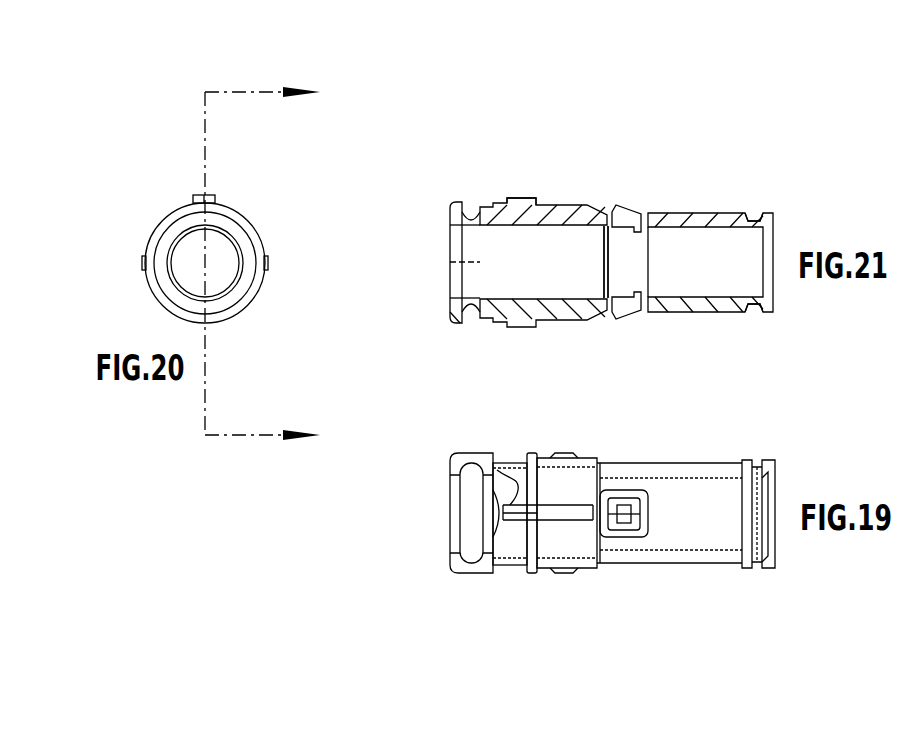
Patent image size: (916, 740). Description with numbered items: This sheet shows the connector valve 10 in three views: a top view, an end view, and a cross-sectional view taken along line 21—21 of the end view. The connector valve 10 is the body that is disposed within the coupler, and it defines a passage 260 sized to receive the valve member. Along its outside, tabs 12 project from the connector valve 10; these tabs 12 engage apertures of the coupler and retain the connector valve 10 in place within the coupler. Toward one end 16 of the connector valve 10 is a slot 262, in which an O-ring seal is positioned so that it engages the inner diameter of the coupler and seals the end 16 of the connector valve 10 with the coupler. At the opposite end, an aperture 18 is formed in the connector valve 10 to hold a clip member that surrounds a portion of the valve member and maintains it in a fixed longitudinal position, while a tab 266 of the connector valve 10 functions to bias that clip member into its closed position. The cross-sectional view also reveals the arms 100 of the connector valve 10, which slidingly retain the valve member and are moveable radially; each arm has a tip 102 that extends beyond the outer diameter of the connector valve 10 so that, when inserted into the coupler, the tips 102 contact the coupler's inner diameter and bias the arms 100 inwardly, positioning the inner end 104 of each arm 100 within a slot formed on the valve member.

In FIG. 20, the connector valve 10 is at (108, 184).
In FIG. 21, the connector valve 10 is at (735, 100).
In FIG. 19, the connector valve 10 is at (690, 634).
In FIG. 20, the tabs 12 is at (142, 262).
In FIG. 19, the tabs 12 is at (558, 453).
In FIG. 21, the end 16 is at (770, 315).
In FIG. 19, the end 16 is at (770, 568).
In FIG. 21, the aperture 18 is at (468, 218).
In FIG. 19, the aperture 18 is at (467, 574).
In FIG. 20, the section line 21— 21 is at (286, 263).
In FIG. 21, the arms 100 is at (628, 300).
In FIG. 21, the tips 102 is at (616, 207).
In FIG. 21, the inner end 104 is at (615, 300).
In FIG. 20, the passage 260 is at (220, 250).
In FIG. 21, the passage 260 is at (520, 277).
In FIG. 21, the slot 262 is at (754, 213).
In FIG. 19, the slot 262 is at (760, 458).
In FIG. 20, the tab 266 is at (214, 196).
In FIG. 21, the tab 266 is at (520, 203).
In FIG. 19, the tab 266 is at (512, 508).